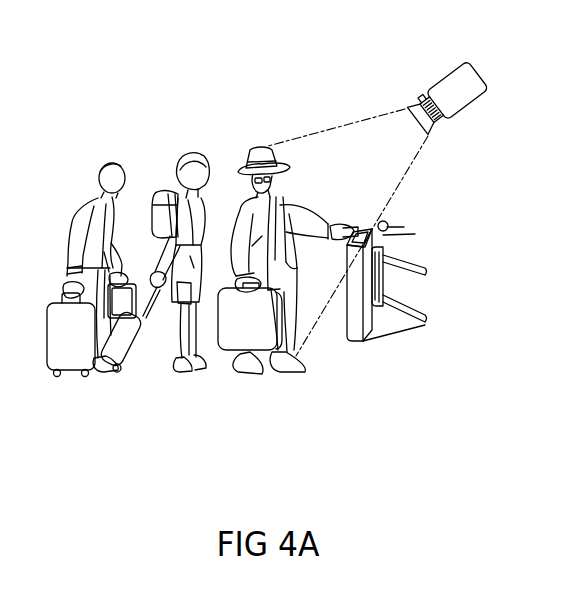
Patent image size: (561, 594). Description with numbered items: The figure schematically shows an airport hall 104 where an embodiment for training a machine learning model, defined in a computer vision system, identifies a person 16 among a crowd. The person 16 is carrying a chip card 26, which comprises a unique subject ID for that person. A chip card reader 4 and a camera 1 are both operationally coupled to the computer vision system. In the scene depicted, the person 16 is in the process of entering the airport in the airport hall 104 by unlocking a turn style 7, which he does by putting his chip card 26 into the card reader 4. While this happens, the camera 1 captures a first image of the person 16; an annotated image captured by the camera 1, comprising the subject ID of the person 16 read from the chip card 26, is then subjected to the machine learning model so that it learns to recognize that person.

The airport hall 104 is at (128, 204).
The camera 1 is at (446, 78).
The person 16 is at (264, 148).
The chip card 26 is at (343, 222).
The chip card reader 4 is at (372, 241).
The turn style 7 is at (415, 296).